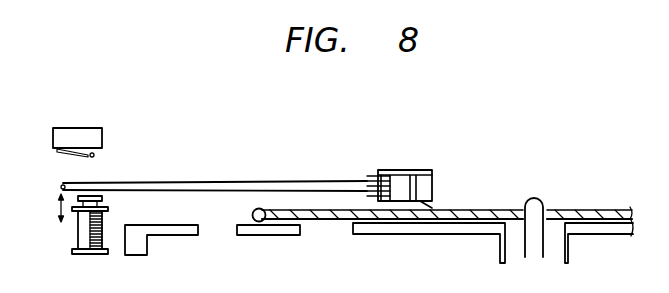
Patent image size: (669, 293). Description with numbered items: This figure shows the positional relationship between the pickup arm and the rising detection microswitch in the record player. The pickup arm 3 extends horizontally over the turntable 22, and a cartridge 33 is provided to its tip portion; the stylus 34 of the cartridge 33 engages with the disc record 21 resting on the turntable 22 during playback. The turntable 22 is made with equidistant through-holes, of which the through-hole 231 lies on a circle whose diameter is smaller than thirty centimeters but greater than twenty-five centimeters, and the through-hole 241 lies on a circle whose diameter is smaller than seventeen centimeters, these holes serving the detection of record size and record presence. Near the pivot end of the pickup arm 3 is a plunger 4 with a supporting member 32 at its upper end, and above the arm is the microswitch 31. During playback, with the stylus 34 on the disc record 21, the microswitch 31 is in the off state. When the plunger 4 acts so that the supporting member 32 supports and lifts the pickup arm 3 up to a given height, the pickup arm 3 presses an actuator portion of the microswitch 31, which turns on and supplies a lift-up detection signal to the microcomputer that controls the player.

The pickup arm 3 is at (242, 181).
The plunger 4 is at (78, 239).
The disc record 21 is at (499, 211).
The turntable 22 is at (412, 236).
The through-hole 231 is at (200, 228).
The through-hole 241 is at (302, 230).
The microswitch 31 is at (77, 127).
The supporting member 32 is at (103, 199).
The cartridge 33 is at (433, 172).
The stylus 34 is at (433, 207).